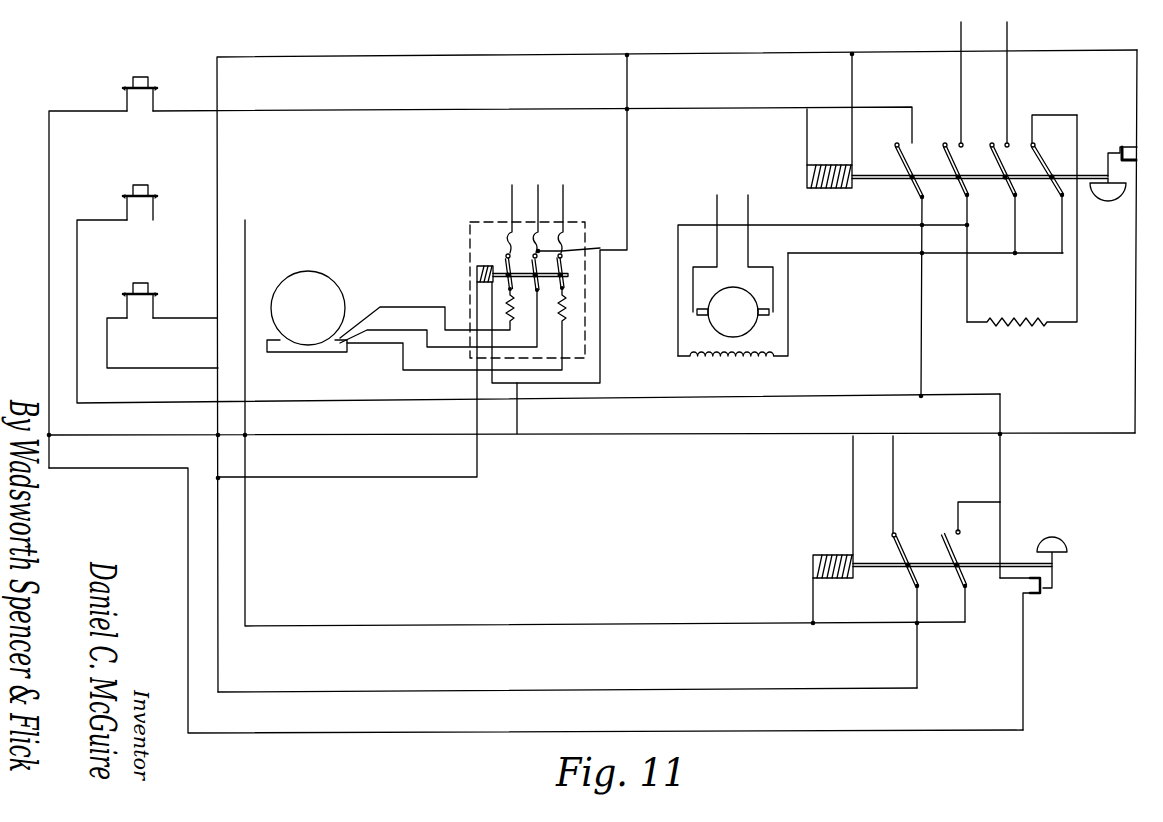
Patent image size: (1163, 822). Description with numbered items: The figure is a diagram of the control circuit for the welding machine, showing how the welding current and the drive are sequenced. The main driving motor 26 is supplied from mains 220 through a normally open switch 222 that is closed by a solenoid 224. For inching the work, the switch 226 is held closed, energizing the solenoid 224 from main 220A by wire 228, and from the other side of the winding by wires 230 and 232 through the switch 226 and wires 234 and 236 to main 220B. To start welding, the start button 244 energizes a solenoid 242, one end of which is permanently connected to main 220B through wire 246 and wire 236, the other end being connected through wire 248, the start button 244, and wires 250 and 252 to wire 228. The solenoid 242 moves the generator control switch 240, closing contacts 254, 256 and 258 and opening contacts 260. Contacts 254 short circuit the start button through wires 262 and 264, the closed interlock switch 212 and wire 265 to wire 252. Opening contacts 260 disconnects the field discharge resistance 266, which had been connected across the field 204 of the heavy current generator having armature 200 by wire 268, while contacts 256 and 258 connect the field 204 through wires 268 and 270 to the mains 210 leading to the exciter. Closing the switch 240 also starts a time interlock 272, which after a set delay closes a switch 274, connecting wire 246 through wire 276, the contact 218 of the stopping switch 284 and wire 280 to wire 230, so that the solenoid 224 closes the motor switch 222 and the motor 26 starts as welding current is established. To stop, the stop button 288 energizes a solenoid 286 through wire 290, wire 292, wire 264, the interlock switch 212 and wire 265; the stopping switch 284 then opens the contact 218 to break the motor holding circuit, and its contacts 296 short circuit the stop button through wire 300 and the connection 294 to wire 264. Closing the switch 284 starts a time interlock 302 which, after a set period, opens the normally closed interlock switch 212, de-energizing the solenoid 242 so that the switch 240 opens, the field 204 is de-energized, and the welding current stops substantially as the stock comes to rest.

The main driving motor 26 is at (333, 286).
The armature of heavy current generator 200 is at (747, 326).
The field of heavy current generator 204 is at (738, 361).
The mains 210 is at (1006, 37).
The time interlock switch 212 is at (1043, 590).
The contactor switch blade 218 is at (897, 532).
The mains 220 is at (510, 200).
The main 220A is at (565, 213).
The main 220B is at (538, 200).
The switch 222 is at (572, 277).
The solenoid 224 is at (476, 273).
The switch 226 is at (148, 284).
The wire 228 is at (490, 298).
The wire 230 is at (476, 313).
The wire 232 is at (178, 368).
The wire 234 is at (393, 56).
The wire 236 is at (628, 172).
The generator control switch 240 is at (883, 180).
The solenoid 242 is at (806, 177).
The start button 244 is at (143, 79).
The wire 246 is at (821, 54).
The wire 248 is at (447, 109).
The wire 250 is at (48, 296).
The wire 252 is at (318, 436).
The contacts 254 is at (896, 146).
The contacts 256 is at (944, 143).
The contacts 258 is at (990, 144).
The contacts 260 is at (1034, 144).
The wire 262 is at (920, 371).
The wire 264 is at (1001, 494).
The wire 265 is at (975, 729).
The field discharge resistance 266 is at (998, 327).
The wire 268 is at (678, 238).
The wire 270 is at (1003, 255).
The time interlock 272 is at (1090, 191).
The interlock switch 274 is at (1118, 146).
The wire 276 is at (1135, 338).
The wire 280 is at (797, 687).
The stopping switch 284 is at (883, 568).
The solenoid 286 is at (812, 569).
The stop button 288 is at (145, 187).
The wire 290 is at (628, 622).
The wire 292 is at (77, 272).
The conductor 294 is at (1002, 533).
The contacts 296 is at (950, 538).
The wire 300 is at (973, 501).
The time interlock 302 is at (1055, 537).